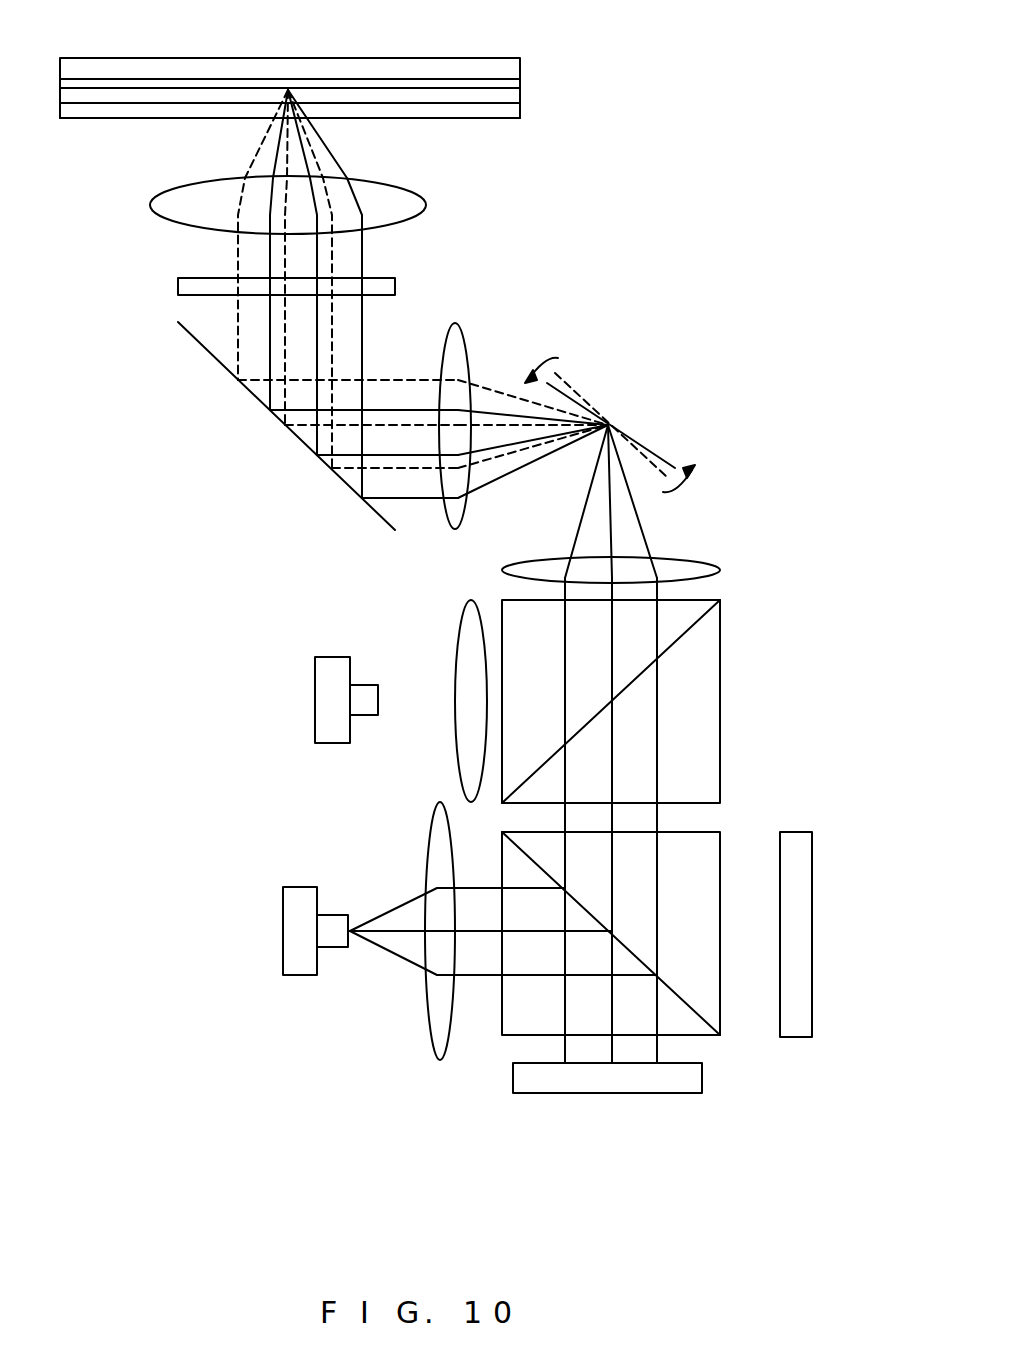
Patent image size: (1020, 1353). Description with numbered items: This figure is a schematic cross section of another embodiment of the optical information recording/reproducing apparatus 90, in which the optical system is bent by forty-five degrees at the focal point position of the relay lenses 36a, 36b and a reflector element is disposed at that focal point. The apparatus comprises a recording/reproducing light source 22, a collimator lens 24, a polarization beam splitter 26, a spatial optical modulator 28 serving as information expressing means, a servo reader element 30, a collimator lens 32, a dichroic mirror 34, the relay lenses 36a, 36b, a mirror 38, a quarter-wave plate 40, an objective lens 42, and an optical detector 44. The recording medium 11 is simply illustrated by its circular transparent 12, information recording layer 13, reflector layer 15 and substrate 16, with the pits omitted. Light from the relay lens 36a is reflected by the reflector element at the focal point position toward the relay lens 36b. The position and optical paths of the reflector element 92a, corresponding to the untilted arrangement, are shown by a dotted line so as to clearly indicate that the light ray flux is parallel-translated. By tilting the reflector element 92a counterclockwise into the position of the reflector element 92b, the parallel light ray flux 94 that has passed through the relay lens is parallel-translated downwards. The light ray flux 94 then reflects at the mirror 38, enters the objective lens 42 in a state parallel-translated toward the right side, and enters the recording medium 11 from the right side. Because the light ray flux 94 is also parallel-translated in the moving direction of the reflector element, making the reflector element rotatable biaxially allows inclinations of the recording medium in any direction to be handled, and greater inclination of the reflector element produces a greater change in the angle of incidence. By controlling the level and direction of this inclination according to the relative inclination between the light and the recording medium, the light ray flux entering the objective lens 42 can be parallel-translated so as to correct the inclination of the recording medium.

The recording medium 11 is at (329, 76).
The circular transparent 12 is at (520, 112).
The information recording layer 13 is at (520, 95).
The reflector layer 15 is at (520, 80).
The substrate 16 is at (520, 63).
The recording/reproducing light source 22 is at (303, 975).
The collimator lens 24 is at (440, 1060).
The polarization beam splitter 26 is at (722, 1037).
The spatial optical modulator 28 is at (678, 1093).
The servo reader element 30 is at (335, 657).
The collimator lens 32 is at (460, 622).
The dichroic mirror 34 is at (722, 742).
The relay lens 36a is at (723, 558).
The relay lens 36b is at (465, 330).
The mirror 38 is at (210, 357).
The quarter-wave plate 40 is at (178, 288).
The objective lens 42 is at (152, 207).
The optical detector 44 is at (796, 1037).
The optical information recording/reproducing apparatus 90 is at (662, 260).
The reflector element 92a is at (583, 402).
The reflector element 92b is at (648, 448).
The parallel light ray flux 94 is at (430, 500).